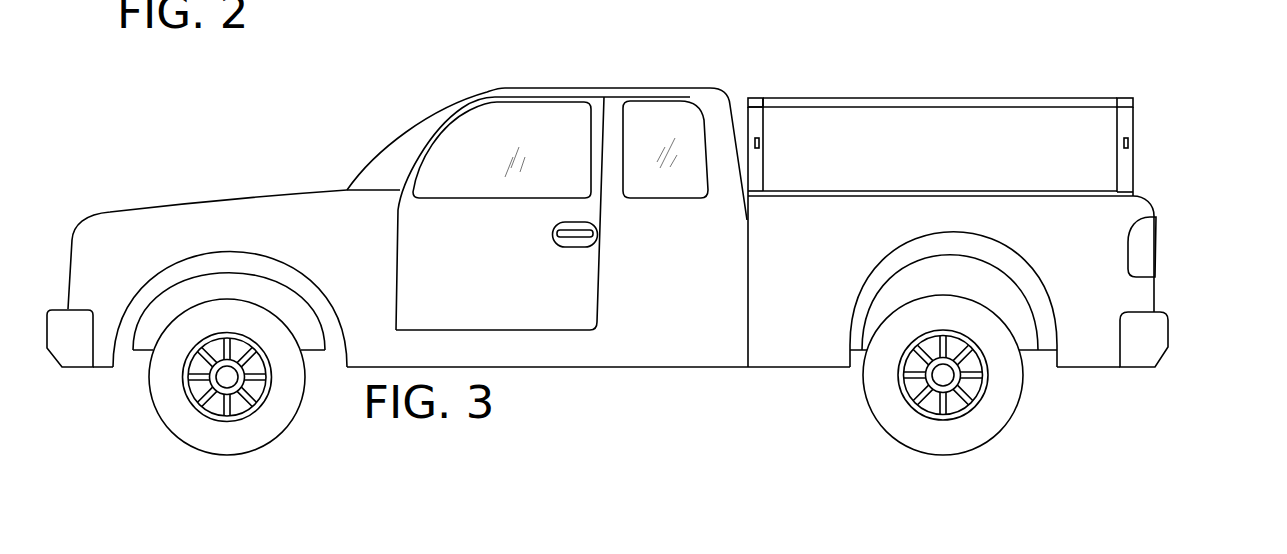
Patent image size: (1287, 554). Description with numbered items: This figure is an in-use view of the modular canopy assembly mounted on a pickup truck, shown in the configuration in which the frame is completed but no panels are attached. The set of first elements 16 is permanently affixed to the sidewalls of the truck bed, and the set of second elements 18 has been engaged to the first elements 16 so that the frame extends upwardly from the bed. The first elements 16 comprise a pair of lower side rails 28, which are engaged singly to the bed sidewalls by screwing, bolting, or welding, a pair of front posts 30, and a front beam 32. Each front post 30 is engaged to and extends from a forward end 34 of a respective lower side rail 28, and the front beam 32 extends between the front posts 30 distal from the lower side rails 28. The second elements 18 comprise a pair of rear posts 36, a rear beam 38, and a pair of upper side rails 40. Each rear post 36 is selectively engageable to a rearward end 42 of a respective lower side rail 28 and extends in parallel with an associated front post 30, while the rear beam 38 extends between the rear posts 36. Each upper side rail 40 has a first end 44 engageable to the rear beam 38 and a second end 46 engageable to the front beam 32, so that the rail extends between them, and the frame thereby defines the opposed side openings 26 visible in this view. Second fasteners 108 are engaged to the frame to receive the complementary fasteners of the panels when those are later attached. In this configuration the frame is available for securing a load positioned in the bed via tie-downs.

The first elements 16 is at (758, 110).
The second elements 18 is at (1115, 163).
The opposed side openings 26 is at (1023, 142).
The lower side rails 28 is at (850, 187).
The front posts 30 is at (748, 123).
The front beam 32 is at (750, 97).
The forward end 34 is at (755, 203).
The rear posts 36 is at (1137, 159).
The rear beam 38 is at (1124, 97).
The upper side rails 40 is at (840, 99).
The rearward end 42 is at (1140, 188).
The first end 44 is at (765, 98).
The second end 46 is at (1115, 99).
The second fasteners 108 is at (752, 150).